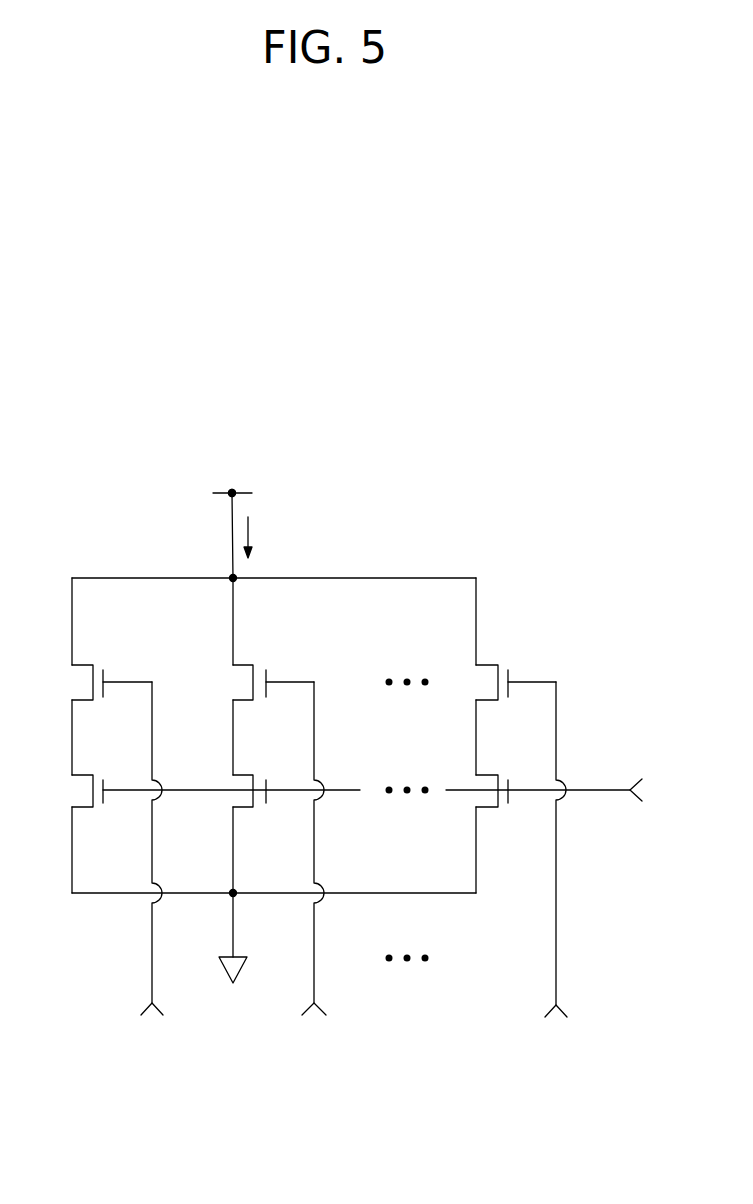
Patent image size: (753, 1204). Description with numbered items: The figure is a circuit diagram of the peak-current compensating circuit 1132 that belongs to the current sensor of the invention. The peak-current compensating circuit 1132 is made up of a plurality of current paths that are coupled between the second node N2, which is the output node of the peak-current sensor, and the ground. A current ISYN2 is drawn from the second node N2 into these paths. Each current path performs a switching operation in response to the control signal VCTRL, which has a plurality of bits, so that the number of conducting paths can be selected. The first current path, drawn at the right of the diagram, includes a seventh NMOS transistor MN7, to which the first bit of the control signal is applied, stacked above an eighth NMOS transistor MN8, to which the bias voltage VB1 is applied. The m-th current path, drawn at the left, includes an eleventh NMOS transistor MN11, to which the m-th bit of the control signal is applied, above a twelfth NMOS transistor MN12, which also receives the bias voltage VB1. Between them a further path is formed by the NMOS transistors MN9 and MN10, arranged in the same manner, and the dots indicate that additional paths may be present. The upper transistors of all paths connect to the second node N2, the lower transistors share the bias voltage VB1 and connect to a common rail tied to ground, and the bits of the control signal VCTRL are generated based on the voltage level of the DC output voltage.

The peak-current compensating circuit 1132 is at (385, 355).
The seventh NMOS transistor MN7 is at (479, 682).
The eighth NMOS transistor MN8 is at (499, 808).
The NMOS transistor MN9 is at (236, 682).
The NMOS transistor MN10 is at (261, 806).
The eleventh NMOS transistor MN11 is at (69, 682).
The twelfth NMOS transistor MN12 is at (69, 791).
The second node N2 is at (233, 492).
The current ISYN2 is at (280, 537).
The bias voltage VB1 is at (394, 789).